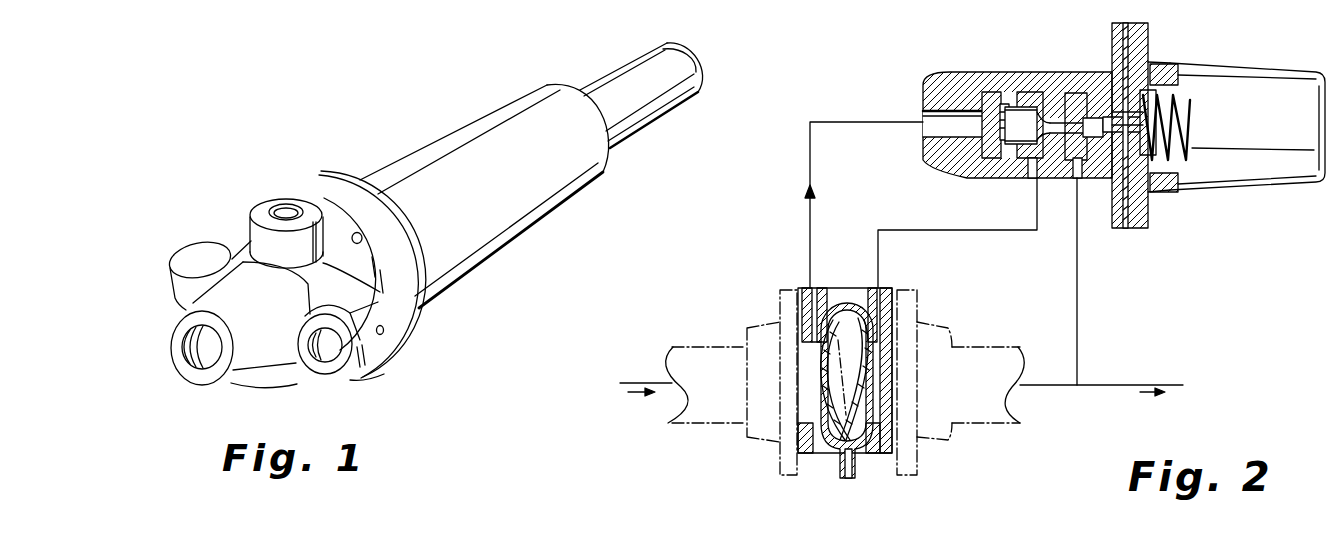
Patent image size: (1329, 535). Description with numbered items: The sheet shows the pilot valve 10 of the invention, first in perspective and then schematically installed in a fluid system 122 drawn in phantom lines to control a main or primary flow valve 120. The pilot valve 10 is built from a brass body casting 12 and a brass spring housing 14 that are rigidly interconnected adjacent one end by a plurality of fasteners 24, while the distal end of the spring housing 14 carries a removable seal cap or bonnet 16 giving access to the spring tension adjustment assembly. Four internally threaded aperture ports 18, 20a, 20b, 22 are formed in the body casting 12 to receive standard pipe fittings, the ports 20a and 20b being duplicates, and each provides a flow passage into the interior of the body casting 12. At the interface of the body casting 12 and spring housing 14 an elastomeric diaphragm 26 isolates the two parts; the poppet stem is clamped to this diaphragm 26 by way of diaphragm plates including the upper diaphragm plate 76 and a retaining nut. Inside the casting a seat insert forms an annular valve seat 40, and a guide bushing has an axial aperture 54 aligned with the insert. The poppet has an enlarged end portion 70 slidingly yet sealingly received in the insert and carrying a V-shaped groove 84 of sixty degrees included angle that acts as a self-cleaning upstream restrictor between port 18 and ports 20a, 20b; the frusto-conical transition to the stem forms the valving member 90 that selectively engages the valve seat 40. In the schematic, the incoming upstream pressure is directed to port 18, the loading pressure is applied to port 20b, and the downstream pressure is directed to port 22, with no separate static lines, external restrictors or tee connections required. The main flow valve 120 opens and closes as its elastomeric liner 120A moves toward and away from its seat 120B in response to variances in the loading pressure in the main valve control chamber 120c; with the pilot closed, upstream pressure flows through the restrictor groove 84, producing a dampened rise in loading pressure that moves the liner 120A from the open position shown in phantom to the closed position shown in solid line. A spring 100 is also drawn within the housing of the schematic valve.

In FIG. 1, the pilot valve 10 is at (501, 265).
In FIG. 2, the pilot valve 10 is at (1220, 58).
In FIG. 1, the body casting 12 is at (362, 362).
In FIG. 2, the body casting 12 is at (1017, 125).
In FIG. 1, the spring housing 14 is at (557, 193).
In FIG. 1, the seal cap or bonnet 16 is at (673, 105).
In FIG. 1, the aperture port 18 is at (198, 357).
In FIG. 2, the aperture port 18 is at (920, 116).
In FIG. 1, the aperture port 20a is at (183, 255).
In FIG. 1, the aperture port 20b is at (328, 358).
In FIG. 2, the aperture port 20b is at (1032, 180).
In FIG. 1, the aperture port 22 is at (284, 212).
In FIG. 2, the aperture port 22 is at (1078, 188).
In FIG. 1, the fasteners 24 is at (411, 334).
In FIG. 2, the fasteners 24 is at (1130, 125).
In FIG. 1, the elastomeric diaphragm 26 is at (531, 0).
In FIG. 2, the annular valve seat 40 is at (1030, 100).
In FIG. 2, the axial aperture 54 is at (1080, 110).
In FIG. 2, the enlarged end portion 70 is at (991, 108).
In FIG. 2, the upper diaphragm plate 76 is at (1150, 150).
In FIG. 2, the V-shaped groove 84 is at (977, 145).
In FIG. 2, the valving member 90 is at (1040, 179).
In FIG. 2, the spring 100 is at (1192, 134).
In FIG. 2, the main or primary flow valve 120 is at (842, 298).
In FIG. 2, the elastomeric liner 120A is at (822, 387).
In FIG. 2, the seat 120B is at (821, 347).
In FIG. 2, the main valve control chamber 120c is at (858, 431).
In FIG. 2, the fluid system 122 is at (745, 327).